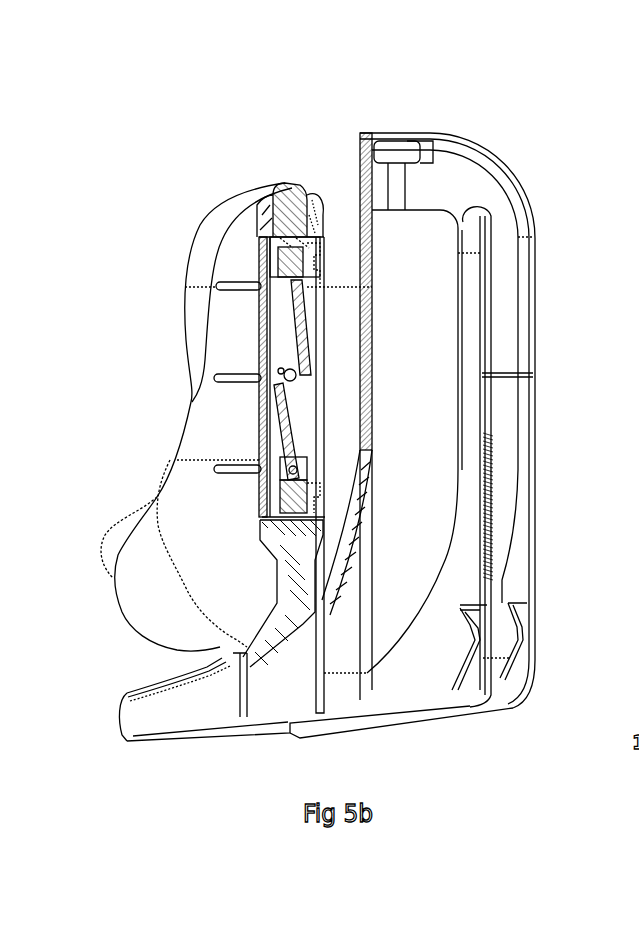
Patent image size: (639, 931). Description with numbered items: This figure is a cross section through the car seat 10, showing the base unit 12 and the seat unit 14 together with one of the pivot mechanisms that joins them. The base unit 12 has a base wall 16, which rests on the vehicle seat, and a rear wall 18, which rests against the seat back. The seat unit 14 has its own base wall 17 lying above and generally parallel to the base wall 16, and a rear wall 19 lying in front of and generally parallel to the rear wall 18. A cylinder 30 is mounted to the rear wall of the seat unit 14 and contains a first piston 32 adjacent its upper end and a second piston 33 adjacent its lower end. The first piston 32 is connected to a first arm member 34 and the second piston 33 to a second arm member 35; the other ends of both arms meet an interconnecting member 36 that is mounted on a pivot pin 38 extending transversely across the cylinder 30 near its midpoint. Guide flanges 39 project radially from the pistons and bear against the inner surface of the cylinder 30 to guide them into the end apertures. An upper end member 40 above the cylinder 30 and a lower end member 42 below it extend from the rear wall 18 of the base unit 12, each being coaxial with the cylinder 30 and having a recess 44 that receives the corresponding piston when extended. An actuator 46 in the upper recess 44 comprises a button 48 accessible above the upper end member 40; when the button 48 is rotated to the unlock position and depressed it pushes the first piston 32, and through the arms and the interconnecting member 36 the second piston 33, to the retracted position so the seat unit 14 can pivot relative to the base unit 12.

The car seat 10 is at (512, 140).
The base unit 12 is at (523, 588).
The seat unit 14 is at (148, 594).
The base wall 16 is at (205, 718).
The base wall 17 is at (228, 630).
The rear wall 18 is at (519, 336).
The rear wall 19 is at (361, 376).
The cylinder 30 is at (327, 424).
The first piston 32 is at (296, 255).
The second piston 33 is at (297, 498).
The first arm member 34 is at (301, 325).
The second arm member 35 is at (284, 435).
The interconnecting member 36 is at (284, 381).
The pivot pin 38 is at (287, 372).
The guide flanges 39 is at (268, 264).
The upper end member 40 is at (317, 207).
The lower end member 42 is at (301, 542).
The recess 44 is at (306, 233).
The actuator 46 is at (273, 185).
The button 48 is at (286, 183).